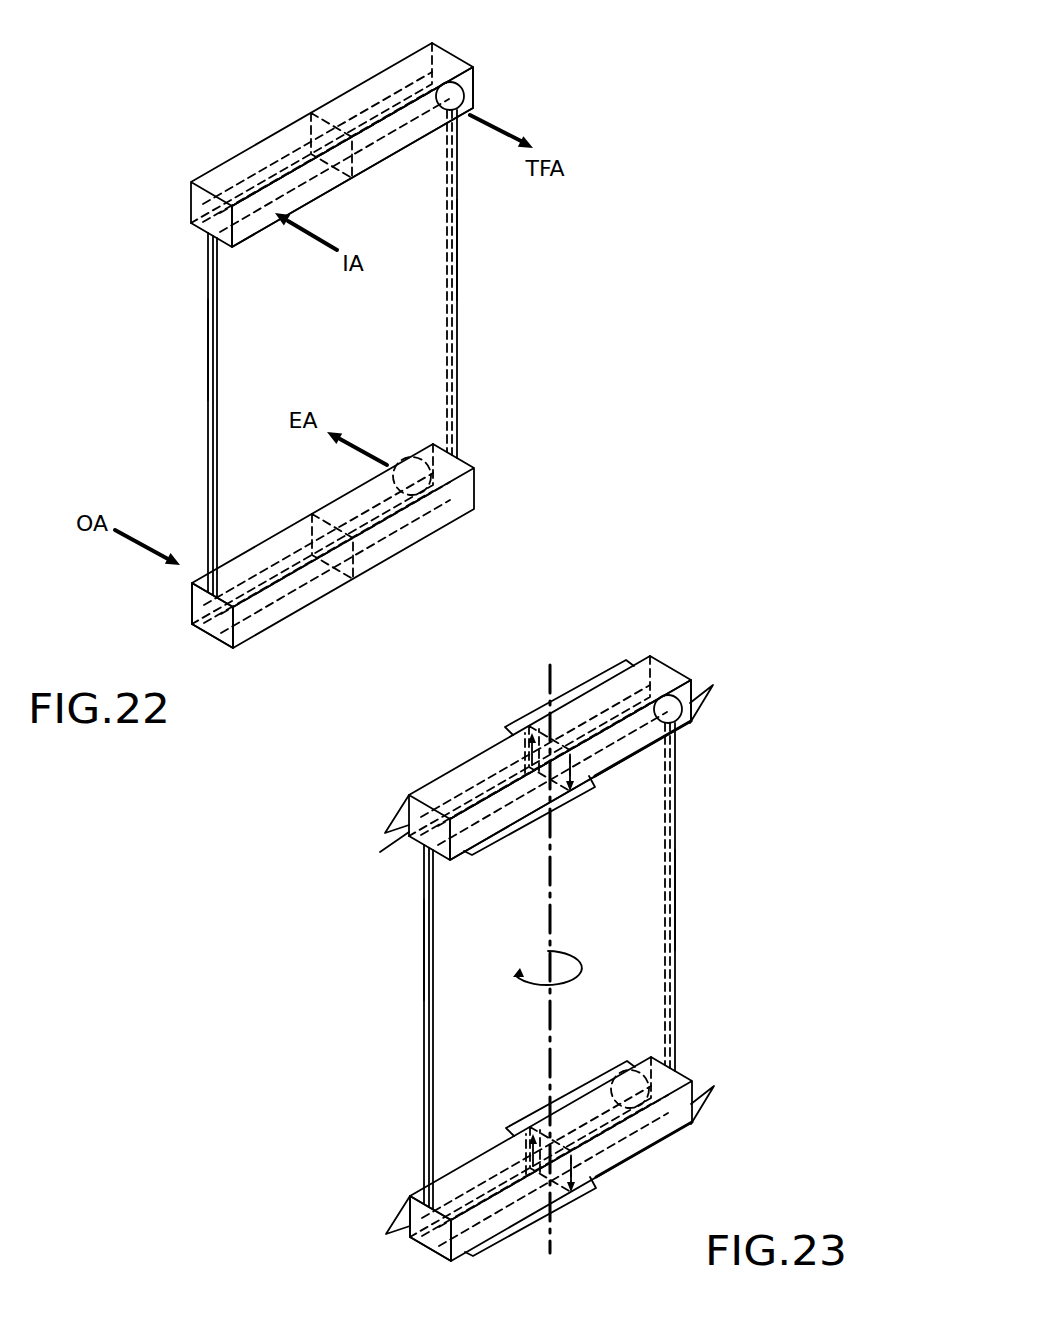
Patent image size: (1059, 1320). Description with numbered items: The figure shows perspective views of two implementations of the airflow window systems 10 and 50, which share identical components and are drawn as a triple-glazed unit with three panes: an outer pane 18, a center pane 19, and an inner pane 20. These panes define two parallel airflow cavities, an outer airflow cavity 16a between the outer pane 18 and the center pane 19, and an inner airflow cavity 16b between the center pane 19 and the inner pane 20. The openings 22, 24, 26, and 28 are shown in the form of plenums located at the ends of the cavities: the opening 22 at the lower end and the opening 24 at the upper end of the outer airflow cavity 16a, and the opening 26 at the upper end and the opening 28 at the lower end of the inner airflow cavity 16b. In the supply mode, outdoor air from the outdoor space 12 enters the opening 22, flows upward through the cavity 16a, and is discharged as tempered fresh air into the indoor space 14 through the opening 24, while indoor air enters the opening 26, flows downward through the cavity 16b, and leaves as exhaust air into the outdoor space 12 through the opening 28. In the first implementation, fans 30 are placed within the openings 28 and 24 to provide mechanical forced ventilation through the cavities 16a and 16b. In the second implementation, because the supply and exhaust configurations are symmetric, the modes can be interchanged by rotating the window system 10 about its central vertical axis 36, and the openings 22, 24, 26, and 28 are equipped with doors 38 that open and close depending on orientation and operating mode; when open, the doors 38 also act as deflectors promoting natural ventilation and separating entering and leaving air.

In FIG. 22, the airflow window system 10 is at (610, 118).
In FIG. 23, the airflow window system 10 is at (815, 744).
In FIG. 22, the airflow window system 50 is at (354, 334).
In FIG. 23, the airflow window system 50 is at (533, 960).
In FIG. 22, the outdoor space 12 is at (120, 391).
In FIG. 23, the outdoor space 12 is at (332, 963).
In FIG. 22, the indoor space 14 is at (566, 314).
In FIG. 23, the indoor space 14 is at (750, 926).
In FIG. 22, the outer airflow cavity 16a is at (247, 187).
In FIG. 23, the outer airflow cavity 16a is at (467, 783).
In FIG. 22, the inner airflow cavity 16b is at (380, 117).
In FIG. 23, the inner airflow cavity 16b is at (650, 703).
In FIG. 22, the outer pane 18 is at (208, 250).
In FIG. 23, the outer pane 18 is at (423, 925).
In FIG. 22, the center pane 19 is at (213, 288).
In FIG. 23, the center pane 19 is at (428, 968).
In FIG. 22, the inner pane 20 is at (217, 330).
In FIG. 23, the inner pane 20 is at (433, 1020).
In FIG. 22, the opening 22 is at (200, 603).
In FIG. 23, the opening 22 is at (435, 1238).
In FIG. 22, the opening 24 is at (403, 72).
In FIG. 23, the opening 24 is at (670, 677).
In FIG. 22, the opening 26 is at (277, 150).
In FIG. 23, the opening 26 is at (445, 855).
In FIG. 22, the opening 28 is at (467, 488).
In FIG. 23, the opening 28 is at (687, 1090).
In FIG. 22, the fan 30 is at (457, 90).
In FIG. 23, the fan 30 is at (668, 883).
In FIG. 23, the central vertical axis 36 is at (548, 686).
In FIG. 23, the door 38 is at (593, 677).